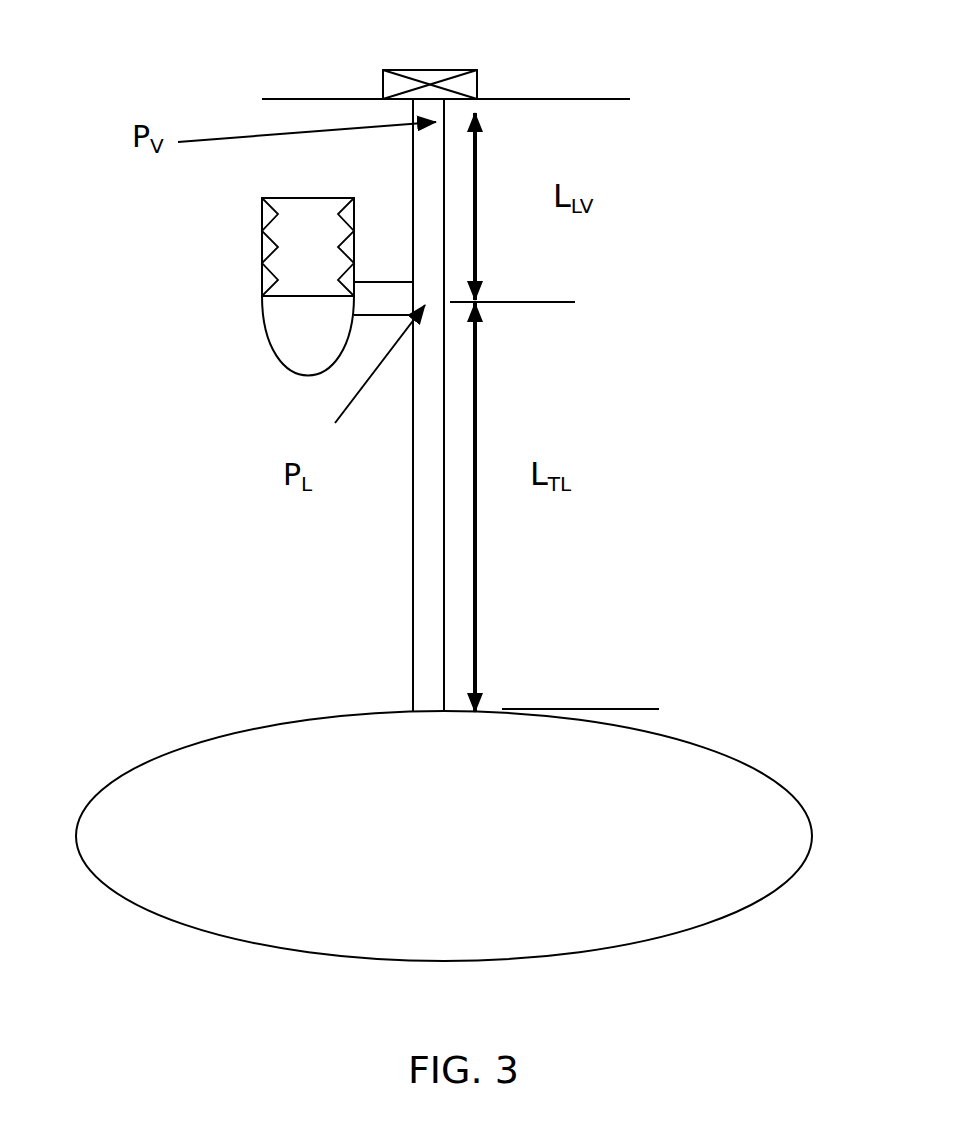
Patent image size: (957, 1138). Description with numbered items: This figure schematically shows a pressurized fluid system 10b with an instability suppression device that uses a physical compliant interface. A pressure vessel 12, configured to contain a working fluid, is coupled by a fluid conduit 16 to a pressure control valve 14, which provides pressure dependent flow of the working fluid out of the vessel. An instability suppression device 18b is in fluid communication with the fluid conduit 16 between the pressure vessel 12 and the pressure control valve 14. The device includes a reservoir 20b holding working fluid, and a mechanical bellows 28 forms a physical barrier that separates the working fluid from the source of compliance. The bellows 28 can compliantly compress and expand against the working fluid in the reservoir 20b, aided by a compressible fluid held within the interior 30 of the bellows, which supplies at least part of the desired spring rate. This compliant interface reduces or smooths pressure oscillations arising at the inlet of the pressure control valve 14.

The pressurized fluid system 10b is at (178, 24).
The pressure vessel 12 is at (76, 828).
The pressure control valve 14 is at (440, 70).
The fluid conduit 16 is at (413, 508).
The instability suppression device 18b is at (282, 314).
The reservoir 20b is at (308, 358).
The mechanical bellows 28 is at (277, 218).
The interior 30 is at (320, 243).